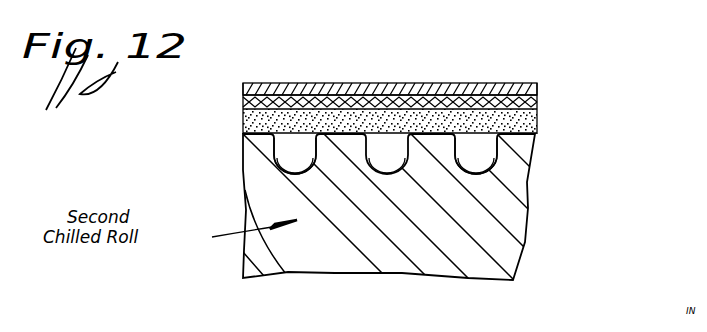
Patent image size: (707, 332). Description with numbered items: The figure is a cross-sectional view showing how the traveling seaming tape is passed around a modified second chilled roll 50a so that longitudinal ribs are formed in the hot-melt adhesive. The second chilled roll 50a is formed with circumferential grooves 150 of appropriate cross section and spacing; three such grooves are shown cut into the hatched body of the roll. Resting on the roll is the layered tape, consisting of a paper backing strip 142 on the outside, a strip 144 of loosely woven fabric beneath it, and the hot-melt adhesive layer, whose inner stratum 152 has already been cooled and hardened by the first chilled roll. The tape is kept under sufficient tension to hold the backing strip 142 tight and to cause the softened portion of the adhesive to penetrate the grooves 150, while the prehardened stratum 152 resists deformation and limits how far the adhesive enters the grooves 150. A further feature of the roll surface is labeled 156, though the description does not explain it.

The paper backing strip 142 is at (490, 84).
The strip of loosely woven fabric 144 is at (540, 102).
The inner stratum 152 is at (338, 120).
The groove bottom 156 is at (481, 152).
The circumferential grooves 150 is at (298, 180).
The second chilled roll 50a is at (512, 208).